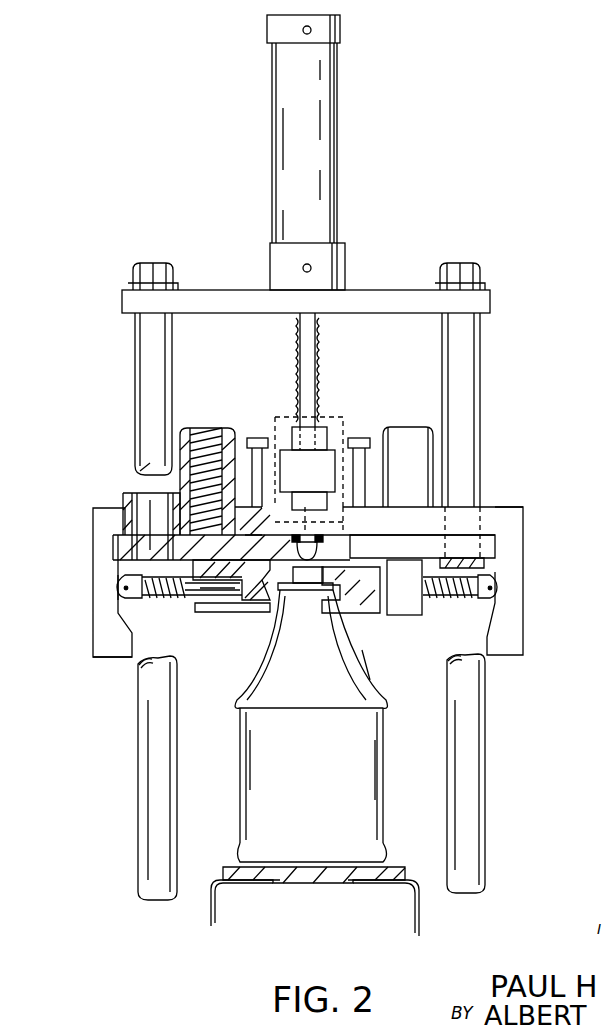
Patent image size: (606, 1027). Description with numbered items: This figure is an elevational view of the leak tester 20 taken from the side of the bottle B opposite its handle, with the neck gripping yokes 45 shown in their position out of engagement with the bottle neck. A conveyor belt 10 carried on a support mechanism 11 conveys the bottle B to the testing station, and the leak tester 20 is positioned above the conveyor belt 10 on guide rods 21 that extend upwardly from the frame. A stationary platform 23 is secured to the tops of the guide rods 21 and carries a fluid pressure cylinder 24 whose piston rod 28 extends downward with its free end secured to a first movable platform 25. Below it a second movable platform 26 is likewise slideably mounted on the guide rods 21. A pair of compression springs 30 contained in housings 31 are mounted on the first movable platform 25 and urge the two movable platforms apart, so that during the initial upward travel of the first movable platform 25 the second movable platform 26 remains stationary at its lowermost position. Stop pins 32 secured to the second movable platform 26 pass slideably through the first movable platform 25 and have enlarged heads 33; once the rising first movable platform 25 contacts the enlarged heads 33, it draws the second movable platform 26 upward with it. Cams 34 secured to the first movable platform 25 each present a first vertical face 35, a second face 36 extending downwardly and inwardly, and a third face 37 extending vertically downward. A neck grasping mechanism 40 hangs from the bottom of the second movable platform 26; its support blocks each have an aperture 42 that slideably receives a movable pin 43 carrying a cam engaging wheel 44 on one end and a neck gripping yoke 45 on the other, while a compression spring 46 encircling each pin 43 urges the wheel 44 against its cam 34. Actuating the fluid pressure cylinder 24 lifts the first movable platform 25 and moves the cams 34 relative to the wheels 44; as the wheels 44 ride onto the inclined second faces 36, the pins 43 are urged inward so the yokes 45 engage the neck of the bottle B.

The conveyor belt 10 is at (390, 870).
The support mechanism 11 is at (417, 925).
The leak tester 20 is at (490, 250).
The guide rods 21 is at (138, 792).
The stationary platform 23 is at (372, 296).
The fluid pressure cylinder 24 is at (325, 150).
The first movable platform 25 is at (423, 523).
The second movable platform 26 is at (480, 547).
The piston rod 28 is at (307, 372).
The compression springs 30 is at (205, 440).
The housings 31 is at (407, 436).
The stop pins 32 is at (247, 462).
The enlarged heads 33 is at (253, 468).
The cams 34 is at (100, 575).
The first vertical face 35 is at (120, 555).
The second face 36 is at (135, 602).
The third face 37 is at (130, 655).
The neck grasping mechanism 40 is at (405, 618).
The aperture 42 is at (225, 600).
The movable pin 43 is at (225, 585).
The cam engaging wheel 44 is at (118, 595).
The neck gripping yoke 45 is at (275, 588).
The compression spring 46 is at (182, 600).
The bottle B is at (325, 805).